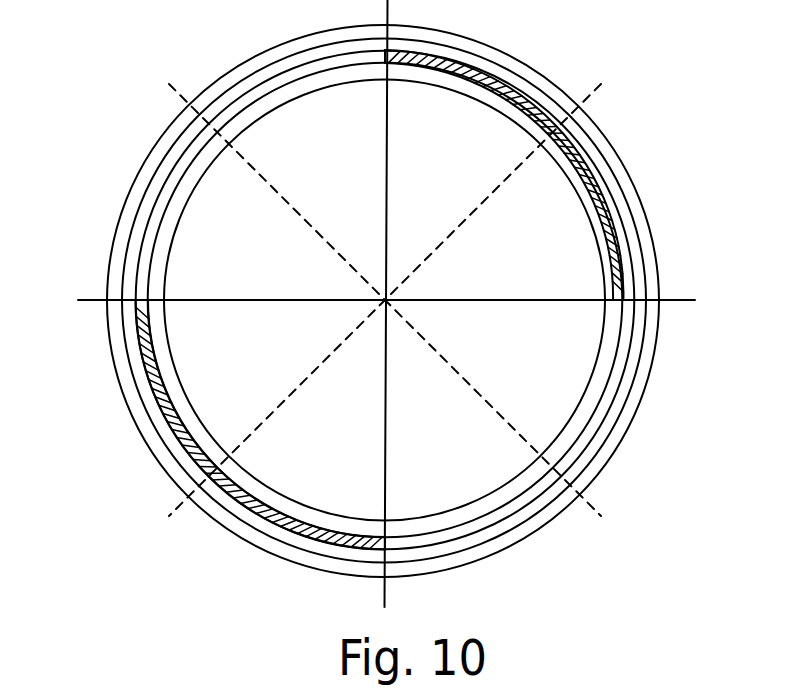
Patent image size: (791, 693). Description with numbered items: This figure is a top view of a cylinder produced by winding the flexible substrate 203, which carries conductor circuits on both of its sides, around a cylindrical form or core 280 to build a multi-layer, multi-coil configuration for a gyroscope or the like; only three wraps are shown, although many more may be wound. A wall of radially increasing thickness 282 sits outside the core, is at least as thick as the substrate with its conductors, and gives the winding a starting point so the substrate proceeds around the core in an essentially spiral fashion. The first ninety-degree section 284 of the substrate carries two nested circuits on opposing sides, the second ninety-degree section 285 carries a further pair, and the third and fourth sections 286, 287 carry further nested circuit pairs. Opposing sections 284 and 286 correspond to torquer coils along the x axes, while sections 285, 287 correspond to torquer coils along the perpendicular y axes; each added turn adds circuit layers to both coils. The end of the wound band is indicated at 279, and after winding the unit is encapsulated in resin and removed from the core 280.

The substrate 203 is at (148, 437).
The end of weight segment 279 is at (615, 305).
The cylindrical form 280 is at (327, 492).
The wall of radially increasing thickness 282 is at (455, 87).
The first 90° section 284 is at (605, 191).
The second 90° section 285 is at (302, 72).
The third section 286 is at (139, 357).
The fourth section 287 is at (505, 516).